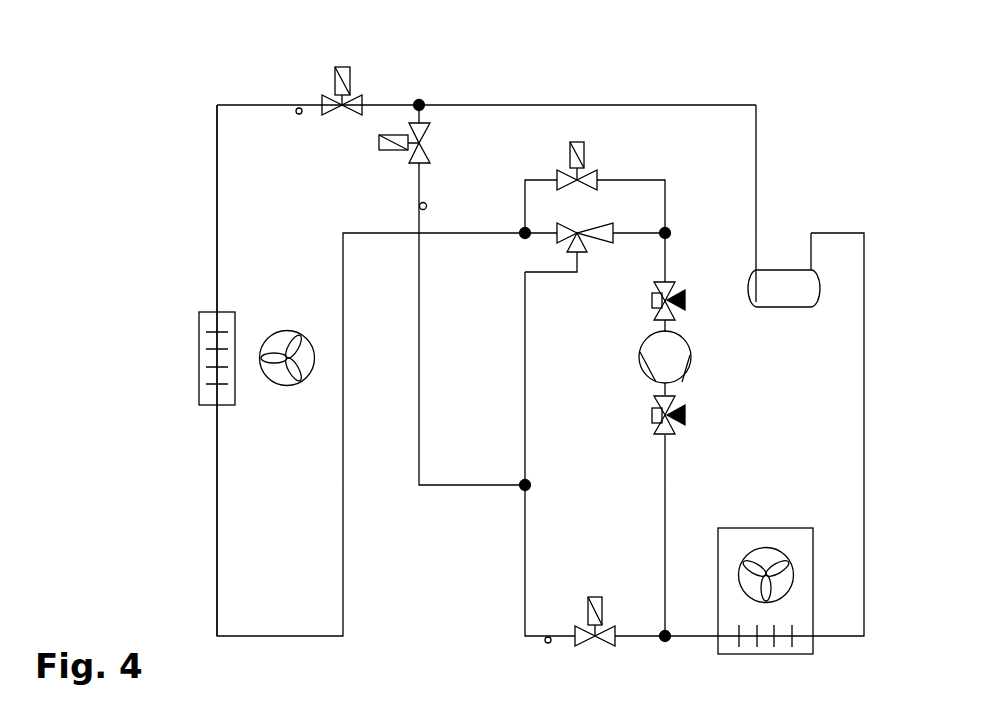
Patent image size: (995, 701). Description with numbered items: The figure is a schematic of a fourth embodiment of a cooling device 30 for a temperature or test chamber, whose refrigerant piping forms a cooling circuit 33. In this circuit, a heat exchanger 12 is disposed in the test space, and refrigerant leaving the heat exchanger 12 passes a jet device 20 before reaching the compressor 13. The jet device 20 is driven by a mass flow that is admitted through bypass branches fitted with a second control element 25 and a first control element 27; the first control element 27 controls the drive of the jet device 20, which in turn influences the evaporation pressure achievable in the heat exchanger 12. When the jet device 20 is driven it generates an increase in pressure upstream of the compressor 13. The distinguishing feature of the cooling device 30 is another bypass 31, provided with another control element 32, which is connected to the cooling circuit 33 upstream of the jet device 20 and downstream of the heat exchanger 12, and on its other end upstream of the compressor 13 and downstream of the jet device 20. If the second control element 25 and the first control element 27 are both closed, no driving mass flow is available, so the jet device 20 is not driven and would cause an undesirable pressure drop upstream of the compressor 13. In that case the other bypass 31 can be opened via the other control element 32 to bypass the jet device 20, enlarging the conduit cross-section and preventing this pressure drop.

The cooling device 30 is at (158, 98).
The cooling circuit 33 is at (208, 178).
The second control element 25 is at (398, 158).
The other bypass 31 is at (645, 180).
The other control element 32 is at (595, 160).
The jet device 20 is at (600, 243).
The heat exchanger 12 is at (207, 358).
The compressor 13 is at (666, 358).
The first control element 27 is at (580, 625).